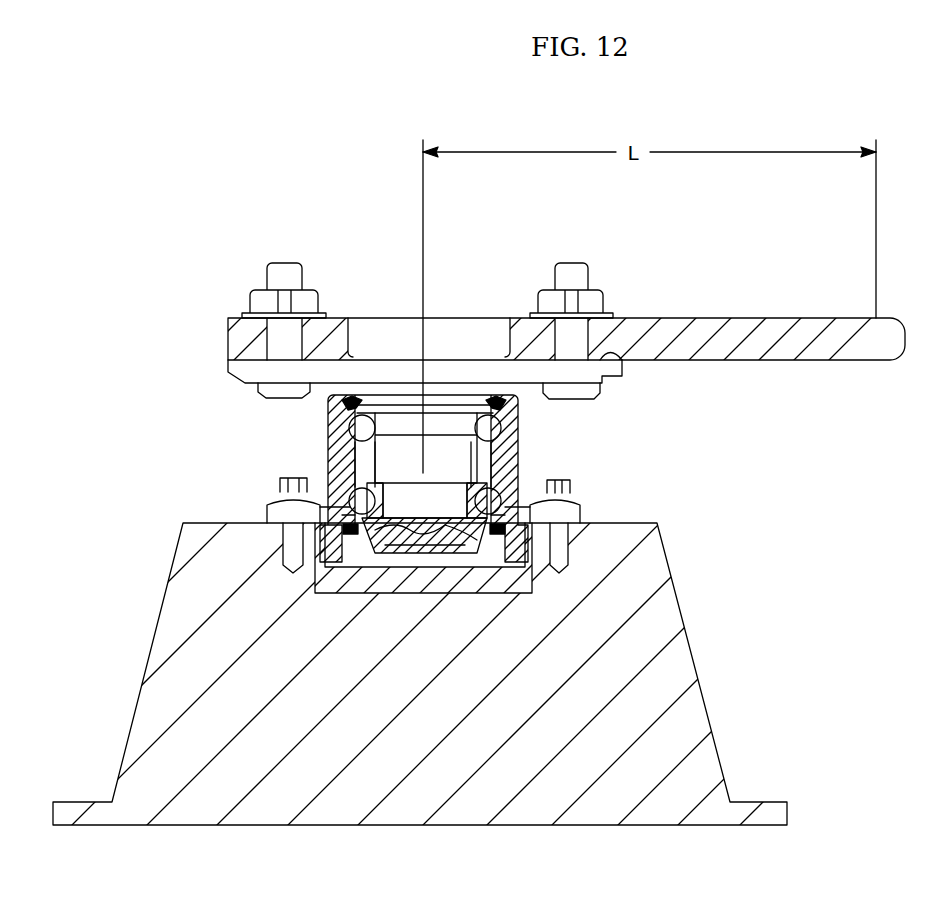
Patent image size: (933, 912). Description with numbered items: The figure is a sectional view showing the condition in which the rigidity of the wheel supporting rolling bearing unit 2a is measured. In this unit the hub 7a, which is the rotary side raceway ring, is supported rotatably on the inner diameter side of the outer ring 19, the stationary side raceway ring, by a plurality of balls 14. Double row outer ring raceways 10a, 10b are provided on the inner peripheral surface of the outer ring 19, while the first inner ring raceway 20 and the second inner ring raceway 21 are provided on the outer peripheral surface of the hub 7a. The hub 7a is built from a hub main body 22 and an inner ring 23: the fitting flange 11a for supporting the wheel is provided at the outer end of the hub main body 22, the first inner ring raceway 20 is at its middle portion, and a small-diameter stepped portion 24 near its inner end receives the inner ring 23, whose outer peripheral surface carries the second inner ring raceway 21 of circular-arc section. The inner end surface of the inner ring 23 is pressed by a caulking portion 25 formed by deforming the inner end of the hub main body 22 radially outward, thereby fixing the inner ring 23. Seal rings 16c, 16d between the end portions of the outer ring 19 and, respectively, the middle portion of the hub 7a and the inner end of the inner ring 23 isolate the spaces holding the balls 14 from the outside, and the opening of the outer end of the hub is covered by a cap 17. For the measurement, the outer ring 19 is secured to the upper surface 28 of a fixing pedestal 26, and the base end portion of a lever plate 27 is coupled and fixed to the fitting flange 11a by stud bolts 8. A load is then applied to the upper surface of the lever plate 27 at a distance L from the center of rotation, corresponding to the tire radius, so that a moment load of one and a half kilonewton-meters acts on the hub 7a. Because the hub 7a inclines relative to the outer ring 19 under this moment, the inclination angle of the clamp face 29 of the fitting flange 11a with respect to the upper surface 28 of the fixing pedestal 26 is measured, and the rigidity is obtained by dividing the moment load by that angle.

The stud bolt 8 is at (282, 275).
The hub main body 22 is at (410, 417).
The seal ring 16c is at (350, 395).
The hub 7a is at (452, 417).
The first inner ring raceway 20 is at (478, 400).
The lever plate 27 is at (786, 342).
The fitting flange 11a is at (250, 371).
The outer ring raceway 10a is at (353, 430).
The ball 14 is at (357, 498).
The wheel supporting rolling bearing unit 2a is at (525, 443).
The clamp face 29 is at (611, 350).
The upper surface 28 is at (630, 523).
The fixing pedestal 26 is at (665, 660).
The outer ring 19 is at (272, 505).
The outer ring raceway 10b is at (345, 520).
The inner ring 23 is at (383, 525).
The small-diameter stepped portion 24 is at (378, 545).
The cap 17 is at (415, 553).
The caulking portion 25 is at (465, 525).
The second inner ring raceway 21 is at (478, 525).
The seal ring 16d is at (500, 525).